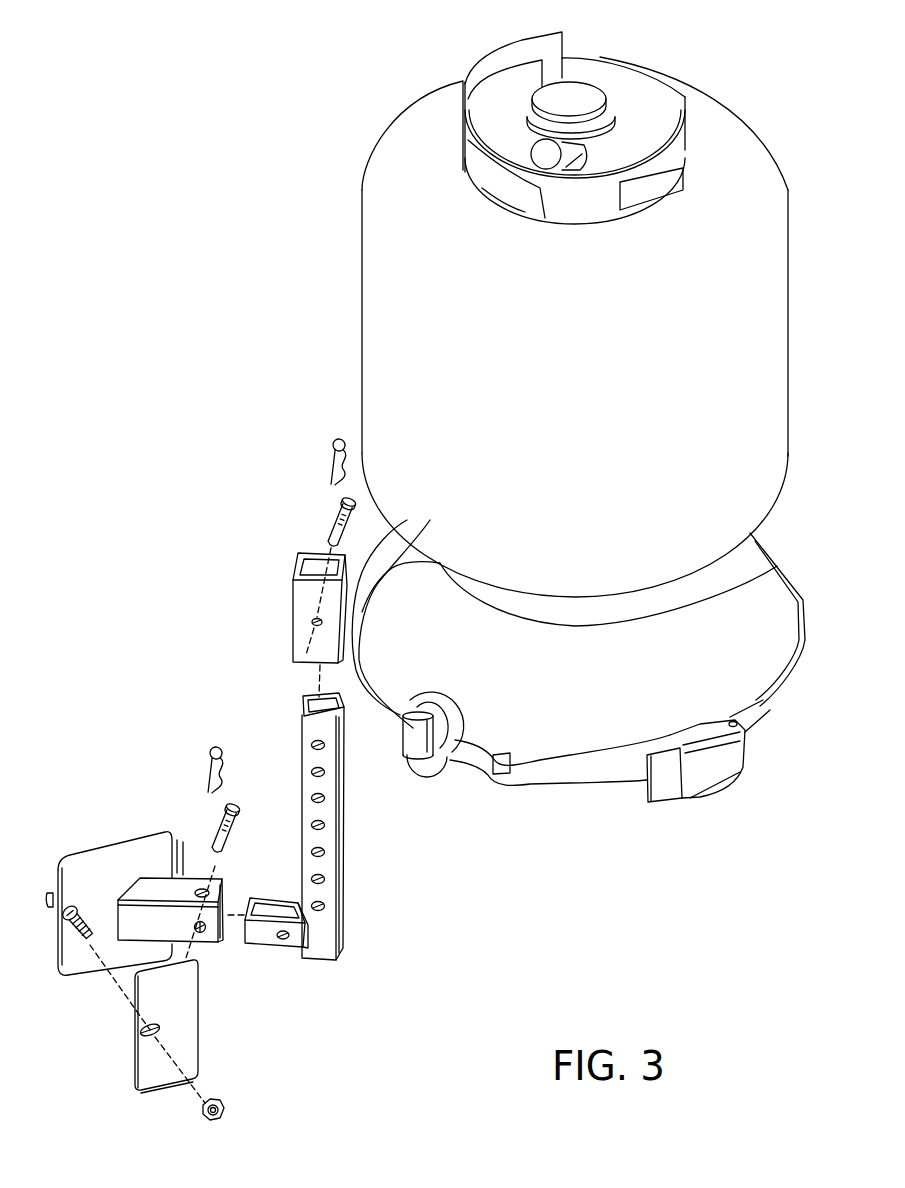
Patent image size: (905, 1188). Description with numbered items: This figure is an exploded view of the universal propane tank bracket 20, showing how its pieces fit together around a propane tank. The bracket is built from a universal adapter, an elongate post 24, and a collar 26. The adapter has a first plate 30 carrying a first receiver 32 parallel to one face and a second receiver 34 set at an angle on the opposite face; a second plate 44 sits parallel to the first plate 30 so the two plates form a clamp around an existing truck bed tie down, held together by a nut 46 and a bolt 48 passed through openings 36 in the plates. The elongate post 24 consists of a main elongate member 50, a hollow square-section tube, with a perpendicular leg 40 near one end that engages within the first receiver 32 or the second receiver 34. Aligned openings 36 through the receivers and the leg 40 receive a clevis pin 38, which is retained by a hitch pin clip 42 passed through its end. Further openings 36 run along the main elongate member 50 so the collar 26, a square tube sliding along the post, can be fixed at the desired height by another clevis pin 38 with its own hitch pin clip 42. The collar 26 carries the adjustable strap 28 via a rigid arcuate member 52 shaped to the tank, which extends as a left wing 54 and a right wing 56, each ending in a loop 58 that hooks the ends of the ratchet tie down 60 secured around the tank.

The universal propane tank bracket 20 is at (120, 668).
The elongate post 24 is at (338, 877).
The collar 26 is at (293, 612).
The adjustable strap 28 is at (787, 687).
The first plate 30 is at (80, 850).
The first receiver 32 is at (187, 857).
The second receiver 34 is at (216, 945).
The openings 36 is at (210, 885).
The clevis pin 38 is at (323, 520).
The leg 40 is at (283, 950).
The hitch pin clip 42 is at (333, 442).
The second plate 44 is at (132, 1060).
The nut 46 is at (200, 1110).
The bolt 48 is at (62, 917).
The main elongate member 50 is at (327, 812).
The rigid arcuate member 52 is at (358, 609).
The left wing 54 is at (380, 518).
The right wing 56 is at (375, 680).
The loop 58 is at (443, 767).
The ratchet tie down 60 is at (702, 797).